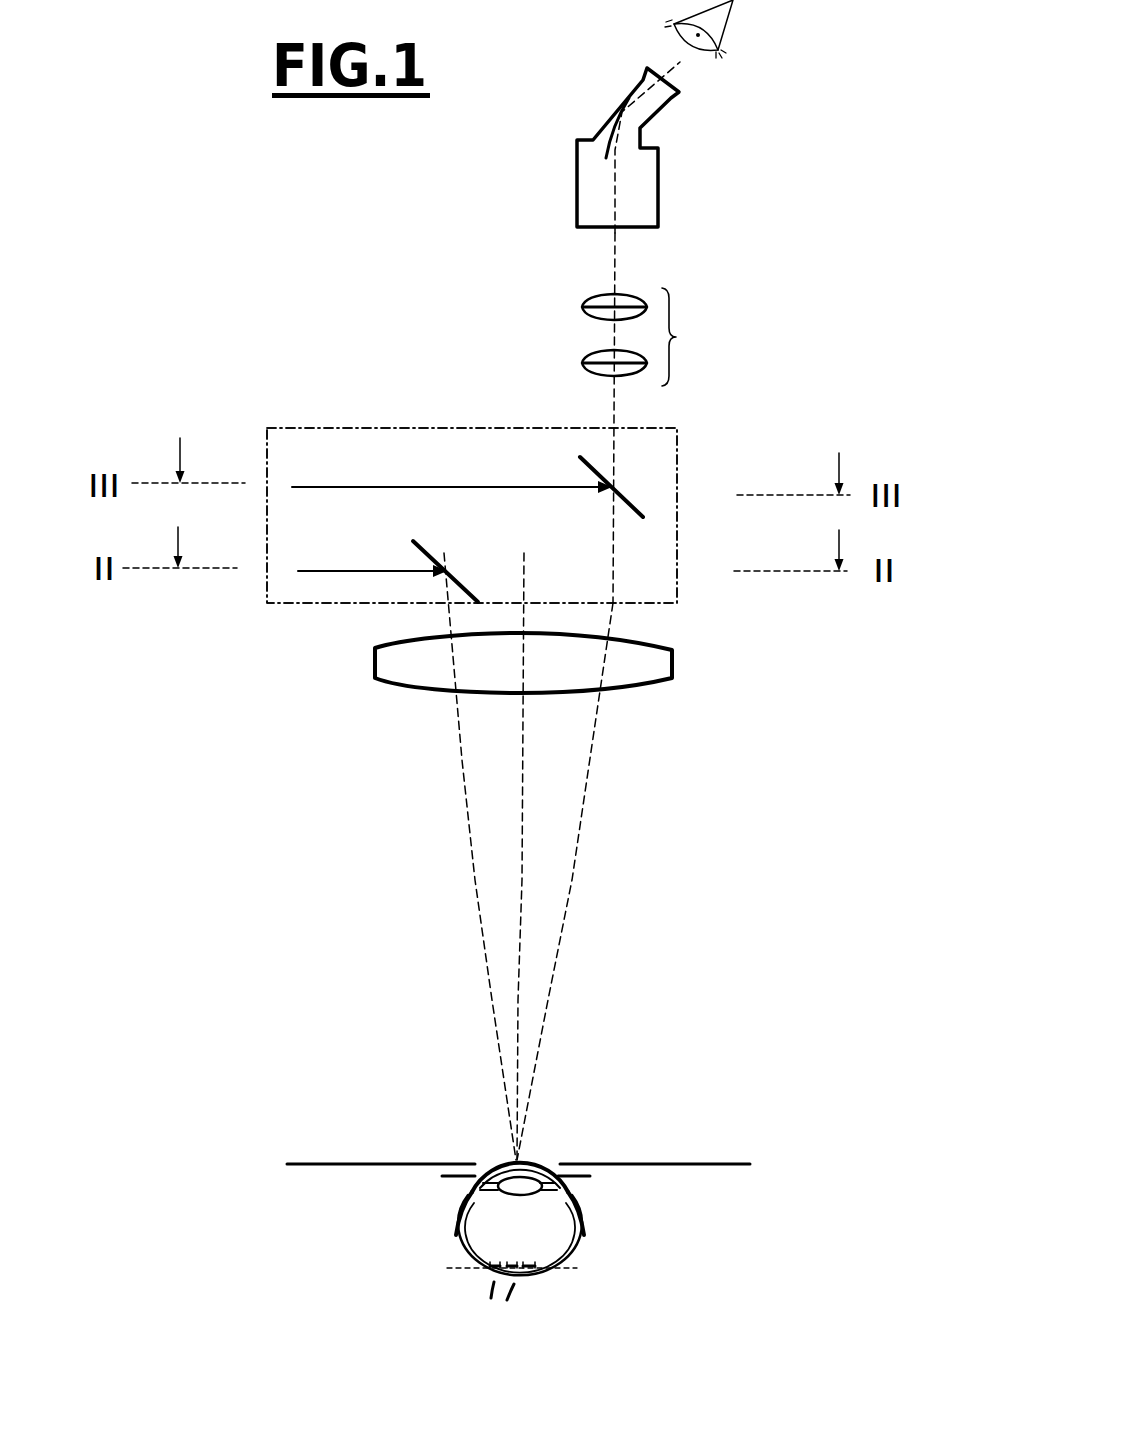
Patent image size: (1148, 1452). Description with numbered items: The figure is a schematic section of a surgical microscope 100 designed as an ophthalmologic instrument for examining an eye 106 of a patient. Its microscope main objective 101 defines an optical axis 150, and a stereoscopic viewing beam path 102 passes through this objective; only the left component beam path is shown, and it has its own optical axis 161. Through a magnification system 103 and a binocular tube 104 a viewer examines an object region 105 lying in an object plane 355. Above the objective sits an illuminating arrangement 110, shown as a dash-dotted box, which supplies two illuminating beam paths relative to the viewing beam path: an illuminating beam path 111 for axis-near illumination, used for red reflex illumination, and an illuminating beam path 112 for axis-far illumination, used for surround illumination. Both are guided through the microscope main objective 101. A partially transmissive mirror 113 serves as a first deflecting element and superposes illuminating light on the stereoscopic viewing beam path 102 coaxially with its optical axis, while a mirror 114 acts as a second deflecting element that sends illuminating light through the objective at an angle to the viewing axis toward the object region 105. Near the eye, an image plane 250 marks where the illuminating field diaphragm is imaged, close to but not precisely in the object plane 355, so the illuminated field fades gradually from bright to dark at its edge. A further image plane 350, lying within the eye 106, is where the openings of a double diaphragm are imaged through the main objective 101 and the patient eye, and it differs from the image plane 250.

The surgical microscope 100 is at (287, 237).
The microscope main objective 101 is at (672, 672).
The stereoscopic viewing beam path 102 is at (614, 263).
The magnification system 103 is at (676, 337).
The binocular tube 104 is at (660, 183).
The object region 105 is at (560, 1138).
The eye 106 is at (567, 1268).
The illuminating arrangement 110 is at (327, 428).
The illuminating beam path 111 is at (387, 487).
The illuminating beam path 112 is at (323, 571).
The mirror 113 is at (634, 502).
The mirror 114 is at (427, 548).
The optical axis 150 is at (523, 768).
The optical axis 161 is at (572, 883).
The image plane 250 is at (580, 1185).
The image plane 350 is at (415, 1243).
The object plane 355 is at (712, 1163).